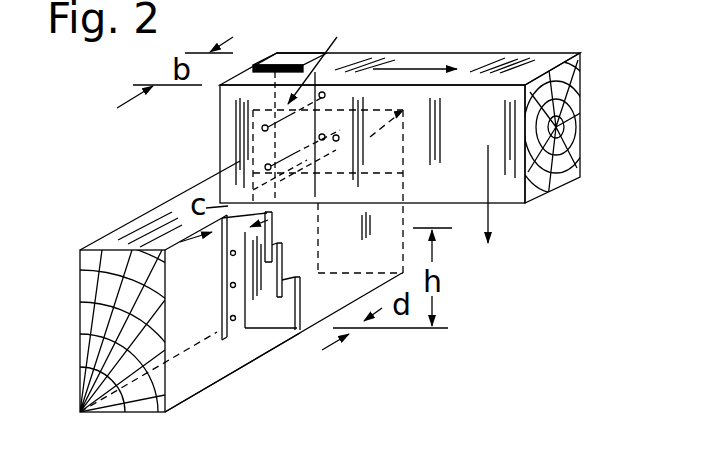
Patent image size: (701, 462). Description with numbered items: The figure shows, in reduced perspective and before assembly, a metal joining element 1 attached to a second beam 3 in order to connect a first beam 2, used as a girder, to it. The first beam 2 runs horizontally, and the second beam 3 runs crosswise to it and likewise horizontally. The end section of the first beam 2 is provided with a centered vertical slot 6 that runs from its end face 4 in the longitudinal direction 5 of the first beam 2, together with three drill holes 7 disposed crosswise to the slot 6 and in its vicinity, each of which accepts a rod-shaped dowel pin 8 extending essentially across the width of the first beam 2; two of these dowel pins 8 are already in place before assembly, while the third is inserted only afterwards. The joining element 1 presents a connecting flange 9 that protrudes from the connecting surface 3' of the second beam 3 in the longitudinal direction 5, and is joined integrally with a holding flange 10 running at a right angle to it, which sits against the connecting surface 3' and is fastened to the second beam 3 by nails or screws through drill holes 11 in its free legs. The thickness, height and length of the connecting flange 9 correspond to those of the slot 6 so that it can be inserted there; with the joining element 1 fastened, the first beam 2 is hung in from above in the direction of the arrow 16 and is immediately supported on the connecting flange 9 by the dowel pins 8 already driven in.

The joining element 1 is at (246, 306).
The first beam 2 is at (497, 52).
The second beam 3 is at (201, 318).
The connecting surface 3' is at (232, 384).
The end face 4 is at (265, 57).
The longitudinal direction 5 is at (407, 67).
The slot 6 is at (293, 62).
The drill holes 7 is at (265, 167).
The dowel pin 8 is at (262, 128).
The connecting flange 9 is at (288, 316).
The holding flange 10 is at (229, 252).
The drill holes 11 is at (231, 317).
The arrow 16 is at (488, 213).
The pocket D is at (345, 73).